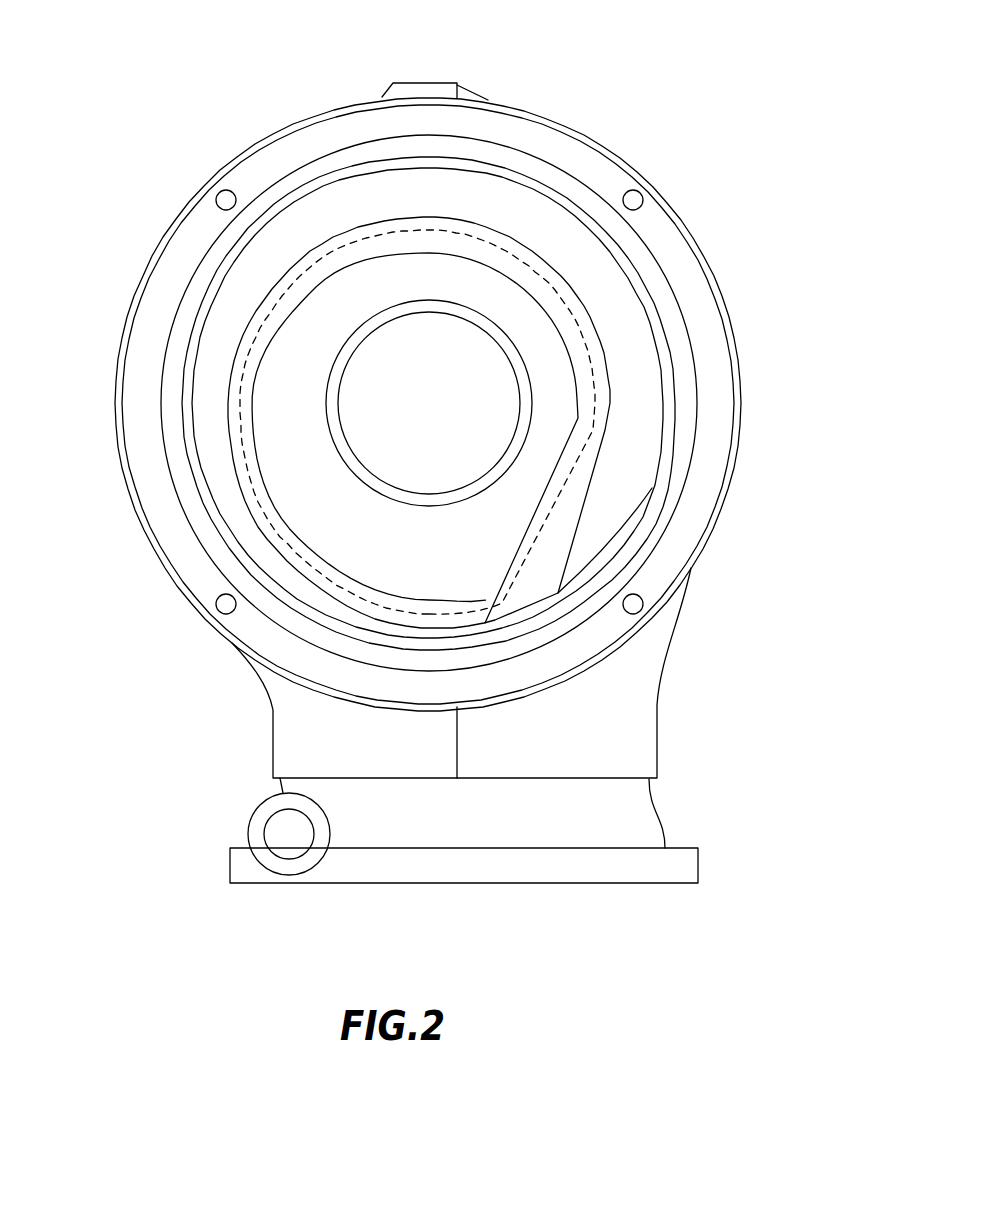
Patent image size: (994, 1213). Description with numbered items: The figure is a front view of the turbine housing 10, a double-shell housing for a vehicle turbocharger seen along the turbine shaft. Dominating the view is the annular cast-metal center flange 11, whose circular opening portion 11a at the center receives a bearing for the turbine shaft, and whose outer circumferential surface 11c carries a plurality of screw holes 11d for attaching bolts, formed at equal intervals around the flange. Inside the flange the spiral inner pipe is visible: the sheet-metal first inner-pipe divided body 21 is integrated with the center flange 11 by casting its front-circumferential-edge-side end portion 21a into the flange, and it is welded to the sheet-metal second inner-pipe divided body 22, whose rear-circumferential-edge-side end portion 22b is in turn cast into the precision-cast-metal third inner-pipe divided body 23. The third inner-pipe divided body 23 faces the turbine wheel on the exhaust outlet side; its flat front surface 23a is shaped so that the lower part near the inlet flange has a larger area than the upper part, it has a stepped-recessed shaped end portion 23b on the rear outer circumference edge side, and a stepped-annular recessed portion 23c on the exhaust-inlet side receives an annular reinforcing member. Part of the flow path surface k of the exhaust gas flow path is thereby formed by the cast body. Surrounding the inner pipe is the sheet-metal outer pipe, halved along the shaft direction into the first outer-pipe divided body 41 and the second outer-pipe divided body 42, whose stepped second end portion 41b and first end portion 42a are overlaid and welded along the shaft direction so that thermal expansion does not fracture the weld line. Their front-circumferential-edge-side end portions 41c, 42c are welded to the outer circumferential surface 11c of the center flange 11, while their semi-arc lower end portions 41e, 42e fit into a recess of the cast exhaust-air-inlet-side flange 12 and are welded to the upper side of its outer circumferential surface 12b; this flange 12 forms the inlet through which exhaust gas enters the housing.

The turbine housing 10 is at (690, 699).
The center flange 11 is at (701, 243).
The circular opening portion 11a is at (630, 498).
The outer circumferential surface 11c is at (161, 243).
The screw holes 11d is at (217, 195).
The exhaust-air-inlet-side flange 12 is at (492, 882).
The outer circumferential surface 12b is at (538, 790).
The first inner-pipe divided body 21 is at (664, 440).
The front-circumferential-edge-side end portion 21a is at (652, 335).
The second inner-pipe divided body 22 is at (618, 540).
The rear-circumferential-edge-side end portion 22b is at (357, 237).
The third inner-pipe divided body 23 is at (552, 258).
The front surface 23a is at (300, 483).
The stepped-recessed shaped end portion 23b is at (522, 240).
The recessed portion 23c is at (335, 362).
The first outer-pipe divided body 41 is at (658, 740).
The second end portion 41b is at (468, 90).
The front-circumferential-edge-side end portion 41c is at (742, 392).
The lower end portion 41e is at (603, 760).
The second outer-pipe divided body 42 is at (272, 743).
The first end portion 42a is at (424, 82).
The front-circumferential-edge-side end portion 42c is at (116, 410).
The lower end portion 42e is at (368, 767).
The flow path surface k is at (404, 247).